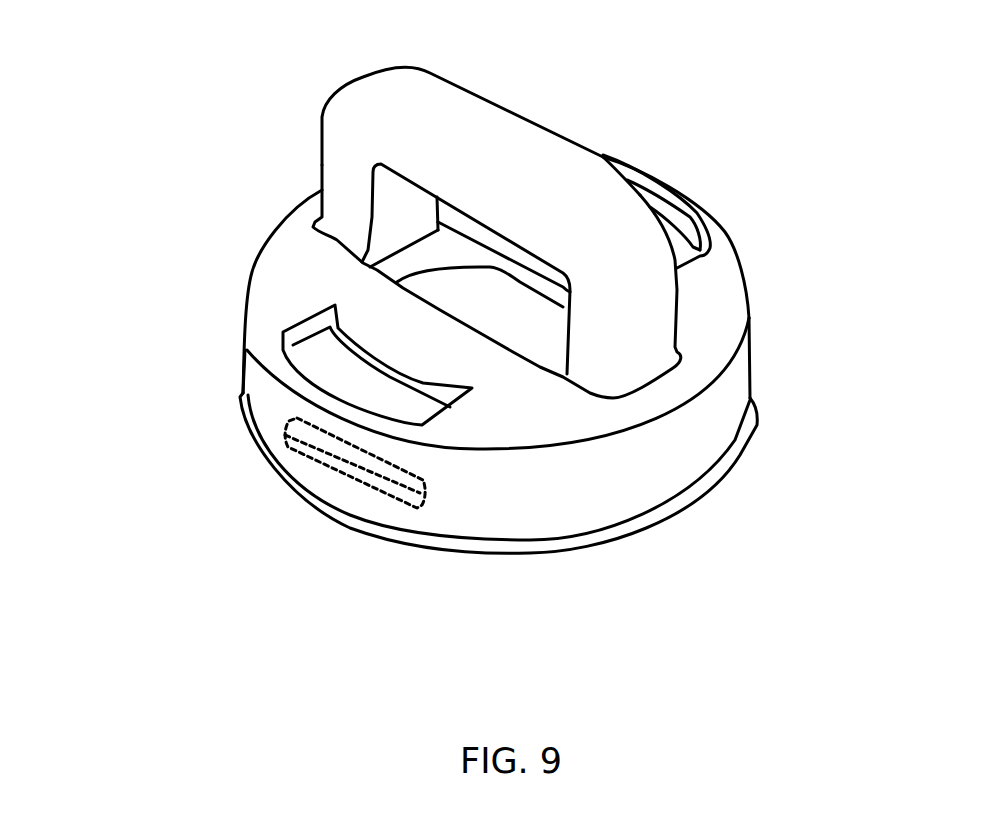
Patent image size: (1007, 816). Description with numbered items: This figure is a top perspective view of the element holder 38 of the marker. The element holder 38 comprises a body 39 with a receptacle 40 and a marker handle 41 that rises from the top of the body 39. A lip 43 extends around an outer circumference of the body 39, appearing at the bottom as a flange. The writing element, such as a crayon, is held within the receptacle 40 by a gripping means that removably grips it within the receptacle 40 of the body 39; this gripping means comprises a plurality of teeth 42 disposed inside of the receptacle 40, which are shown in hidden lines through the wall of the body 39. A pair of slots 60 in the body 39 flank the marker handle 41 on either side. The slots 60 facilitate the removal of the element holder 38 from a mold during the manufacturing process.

The element holder 38 is at (232, 169).
The body 39 is at (750, 357).
The receptacle 40 is at (530, 328).
The marker handle 41 is at (510, 137).
The teeth 42 is at (318, 470).
The lip 43 is at (700, 523).
The slots 60 is at (330, 354).